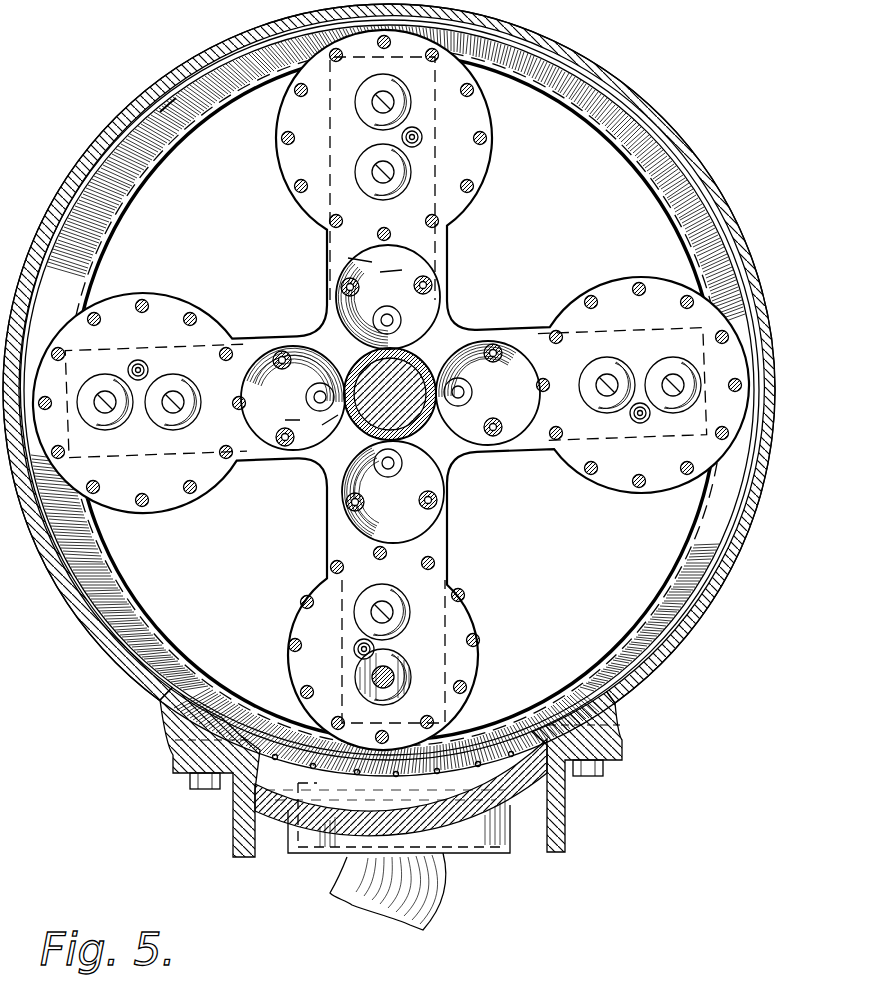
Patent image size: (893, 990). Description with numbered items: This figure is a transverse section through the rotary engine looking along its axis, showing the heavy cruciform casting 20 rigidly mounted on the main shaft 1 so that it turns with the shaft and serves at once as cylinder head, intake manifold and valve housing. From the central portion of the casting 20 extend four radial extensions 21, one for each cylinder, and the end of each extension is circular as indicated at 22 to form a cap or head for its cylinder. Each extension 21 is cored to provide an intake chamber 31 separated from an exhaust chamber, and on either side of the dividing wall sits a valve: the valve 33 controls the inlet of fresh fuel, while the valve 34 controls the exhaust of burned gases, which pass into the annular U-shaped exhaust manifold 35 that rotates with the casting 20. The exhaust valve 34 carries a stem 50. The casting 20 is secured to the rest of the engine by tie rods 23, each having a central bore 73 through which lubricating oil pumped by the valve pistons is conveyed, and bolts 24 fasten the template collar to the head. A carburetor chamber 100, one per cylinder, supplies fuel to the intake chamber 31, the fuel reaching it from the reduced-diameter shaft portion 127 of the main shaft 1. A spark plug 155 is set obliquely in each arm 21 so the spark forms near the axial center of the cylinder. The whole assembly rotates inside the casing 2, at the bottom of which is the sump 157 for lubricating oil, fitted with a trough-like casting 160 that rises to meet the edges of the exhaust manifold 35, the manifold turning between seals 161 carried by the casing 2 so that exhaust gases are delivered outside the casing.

The main shaft 1 is at (359, 361).
The casing 2 is at (566, 45).
The casting 20 is at (458, 318).
The extension 21 is at (447, 242).
The circular end 22 is at (280, 160).
The tie rod 23 is at (453, 300).
The bolt 24 is at (284, 137).
The intake chamber 31 is at (343, 343).
The valve 33 is at (411, 170).
The valve 34 is at (411, 104).
The exhaust manifold 35 is at (170, 112).
The stem 50 is at (398, 677).
The central bore 73 is at (432, 286).
The carburetor chamber 100 is at (378, 316).
The shaft portion 127 is at (421, 358).
The spark plug 155 is at (423, 137).
The sump 157 is at (566, 803).
The casting 160 is at (283, 847).
The seal 161 is at (128, 165).